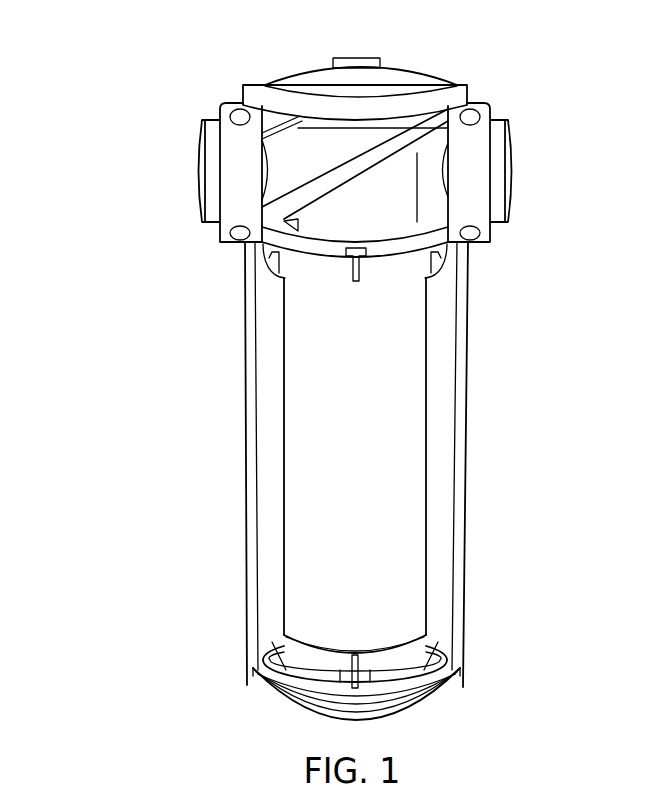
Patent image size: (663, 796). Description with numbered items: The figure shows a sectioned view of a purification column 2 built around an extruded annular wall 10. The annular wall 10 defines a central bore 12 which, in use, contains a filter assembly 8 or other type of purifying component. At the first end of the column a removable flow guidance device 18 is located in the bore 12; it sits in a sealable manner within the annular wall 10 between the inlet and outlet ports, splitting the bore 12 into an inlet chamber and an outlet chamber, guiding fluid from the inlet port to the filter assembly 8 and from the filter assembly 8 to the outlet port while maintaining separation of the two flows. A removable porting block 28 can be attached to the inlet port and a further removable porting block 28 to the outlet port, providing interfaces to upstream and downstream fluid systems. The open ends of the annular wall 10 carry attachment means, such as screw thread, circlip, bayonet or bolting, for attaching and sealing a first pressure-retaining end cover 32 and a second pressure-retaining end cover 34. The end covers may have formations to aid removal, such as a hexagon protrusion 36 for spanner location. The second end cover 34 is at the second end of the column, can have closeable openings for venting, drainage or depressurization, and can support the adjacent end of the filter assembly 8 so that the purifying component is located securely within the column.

The purification column 2 is at (146, 331).
The filter assembly 8 is at (343, 459).
The annular wall 10 is at (462, 412).
The central bore 12 is at (270, 500).
The flow guidance device 18 is at (362, 213).
The porting block 28 is at (203, 172).
The first pressure-retaining end cover 32 is at (297, 73).
The second pressure-retaining end cover 34 is at (430, 710).
The hexagon protrusion 36 is at (360, 63).